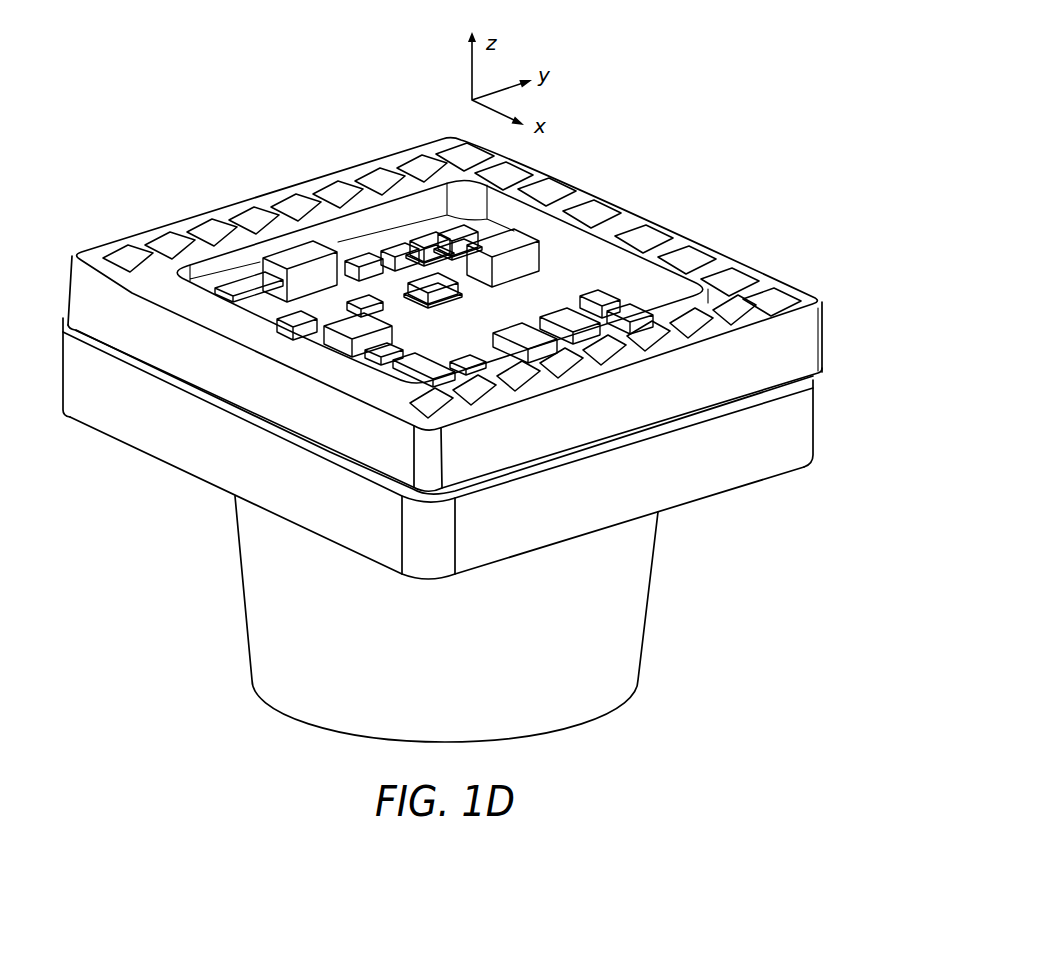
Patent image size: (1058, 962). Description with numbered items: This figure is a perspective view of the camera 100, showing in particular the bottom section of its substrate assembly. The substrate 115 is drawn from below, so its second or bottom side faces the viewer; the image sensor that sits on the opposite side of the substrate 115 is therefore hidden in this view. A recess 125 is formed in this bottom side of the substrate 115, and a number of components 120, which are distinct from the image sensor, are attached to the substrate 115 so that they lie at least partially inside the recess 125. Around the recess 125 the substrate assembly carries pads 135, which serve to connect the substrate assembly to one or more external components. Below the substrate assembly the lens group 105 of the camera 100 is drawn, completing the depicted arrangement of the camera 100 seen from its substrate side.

The camera 100 is at (774, 61).
The lens group 105 is at (265, 643).
The substrate 115 is at (818, 346).
The components 120 is at (297, 256).
The recess 125 is at (553, 280).
The pads 135 is at (740, 288).